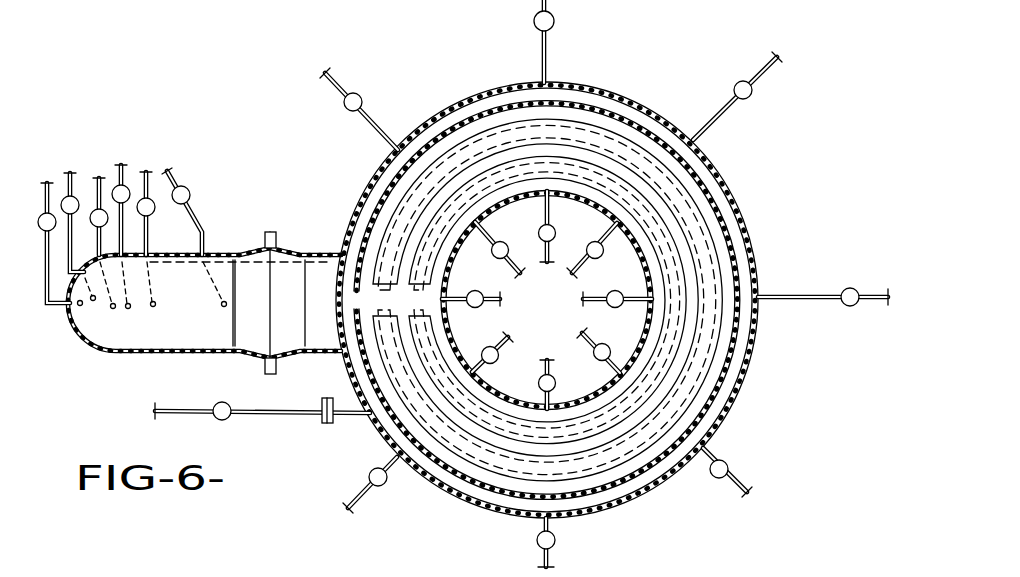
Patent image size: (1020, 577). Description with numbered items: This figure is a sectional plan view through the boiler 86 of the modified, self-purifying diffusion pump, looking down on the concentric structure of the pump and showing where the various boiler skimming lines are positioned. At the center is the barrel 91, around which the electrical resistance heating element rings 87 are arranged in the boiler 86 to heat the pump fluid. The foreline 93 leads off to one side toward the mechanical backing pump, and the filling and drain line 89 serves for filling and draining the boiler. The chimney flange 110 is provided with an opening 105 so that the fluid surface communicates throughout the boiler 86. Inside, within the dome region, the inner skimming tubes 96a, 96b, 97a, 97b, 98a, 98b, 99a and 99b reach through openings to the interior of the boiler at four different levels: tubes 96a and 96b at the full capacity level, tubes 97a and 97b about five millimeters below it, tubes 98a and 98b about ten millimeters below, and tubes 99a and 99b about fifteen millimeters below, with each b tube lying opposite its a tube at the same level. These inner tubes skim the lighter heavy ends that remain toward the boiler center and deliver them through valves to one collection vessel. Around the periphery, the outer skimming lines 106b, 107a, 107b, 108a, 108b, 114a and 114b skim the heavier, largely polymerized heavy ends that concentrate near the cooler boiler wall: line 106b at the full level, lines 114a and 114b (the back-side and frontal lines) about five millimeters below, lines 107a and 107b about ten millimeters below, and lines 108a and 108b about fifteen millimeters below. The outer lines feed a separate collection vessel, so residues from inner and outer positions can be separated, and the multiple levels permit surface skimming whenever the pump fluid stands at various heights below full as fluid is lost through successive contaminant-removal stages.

The boiler 86 is at (659, 78).
The electrical resistance heating element rings 87 is at (697, 383).
The filling and drain line 89 is at (310, 415).
The barrel 91 is at (760, 347).
The foreline 93 is at (236, 253).
The skimming tube 96a is at (468, 304).
The skimming tube 96b is at (633, 292).
The skimming tube 97a is at (540, 230).
The skimming tube 97b is at (540, 378).
The skimming tube 98a is at (489, 250).
The skimming tube 98b is at (632, 342).
The skimming tube 99a is at (598, 240).
The skimming tube 99b is at (507, 338).
The opening 105 is at (354, 292).
The outer skimming line 106b is at (783, 297).
The outer skimming line 107a is at (376, 128).
The outer skimming line 107b is at (730, 492).
The outer skimming line 108a is at (718, 117).
The outer skimming line 108b is at (367, 483).
The chimney flange 110 is at (350, 276).
The valved outer line 114a is at (540, 40).
The frontal line 114b is at (542, 556).